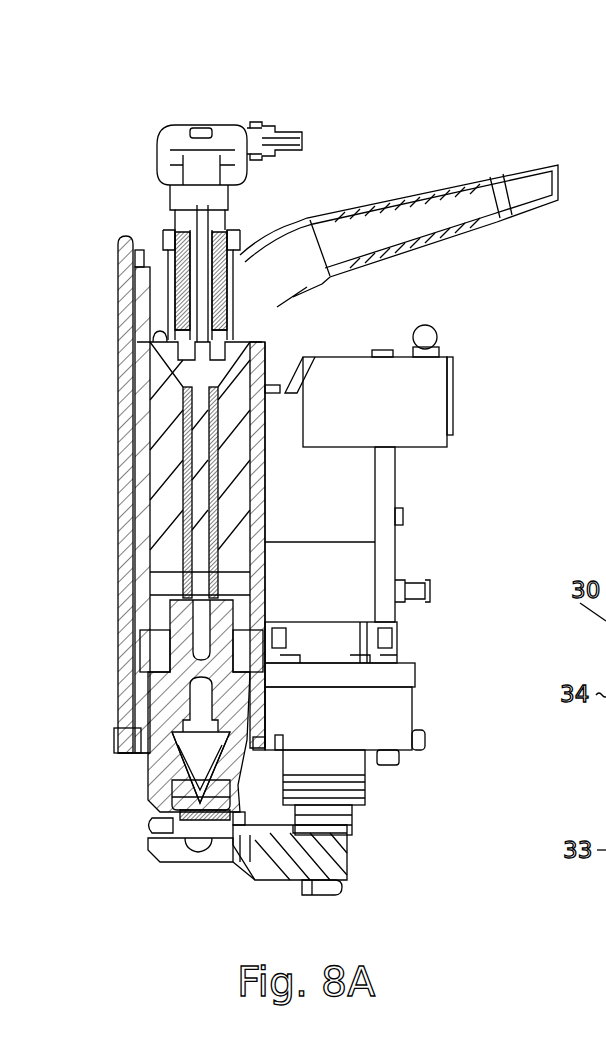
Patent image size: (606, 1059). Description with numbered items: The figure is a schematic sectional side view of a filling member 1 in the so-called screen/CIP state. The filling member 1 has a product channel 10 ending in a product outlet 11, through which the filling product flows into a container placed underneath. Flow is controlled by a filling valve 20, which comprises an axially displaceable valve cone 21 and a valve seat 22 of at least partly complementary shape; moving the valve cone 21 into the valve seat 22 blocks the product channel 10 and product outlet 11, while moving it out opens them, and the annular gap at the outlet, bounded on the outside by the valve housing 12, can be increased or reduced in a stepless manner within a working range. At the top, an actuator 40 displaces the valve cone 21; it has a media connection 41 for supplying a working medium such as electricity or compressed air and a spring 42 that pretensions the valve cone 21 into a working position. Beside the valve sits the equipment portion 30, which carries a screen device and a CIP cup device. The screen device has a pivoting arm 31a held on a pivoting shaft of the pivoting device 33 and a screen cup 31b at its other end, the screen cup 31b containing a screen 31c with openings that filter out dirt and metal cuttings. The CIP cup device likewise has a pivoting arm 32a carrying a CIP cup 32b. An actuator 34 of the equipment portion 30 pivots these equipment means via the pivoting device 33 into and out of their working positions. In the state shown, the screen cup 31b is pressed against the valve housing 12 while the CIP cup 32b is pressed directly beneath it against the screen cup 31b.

The filling member 1 is at (164, 92).
The product channel 10 is at (407, 217).
The product outlet 11 is at (325, 797).
The valve housing 12 is at (160, 784).
The filling valve 20 is at (158, 690).
The valve cone 21 is at (178, 745).
The valve seat 22 is at (130, 742).
The equipment portion 30 is at (430, 625).
The pivoting arm 31a is at (215, 813).
The screen cup 31b is at (152, 835).
The screen 31c is at (197, 816).
The pivoting arm 32a is at (225, 815).
The CIP cup 32b is at (212, 860).
The pivoting device 33 is at (362, 835).
The actuator 34 is at (397, 694).
The actuator 40 is at (150, 205).
The media connection 41 is at (302, 139).
The spring 42 is at (222, 272).